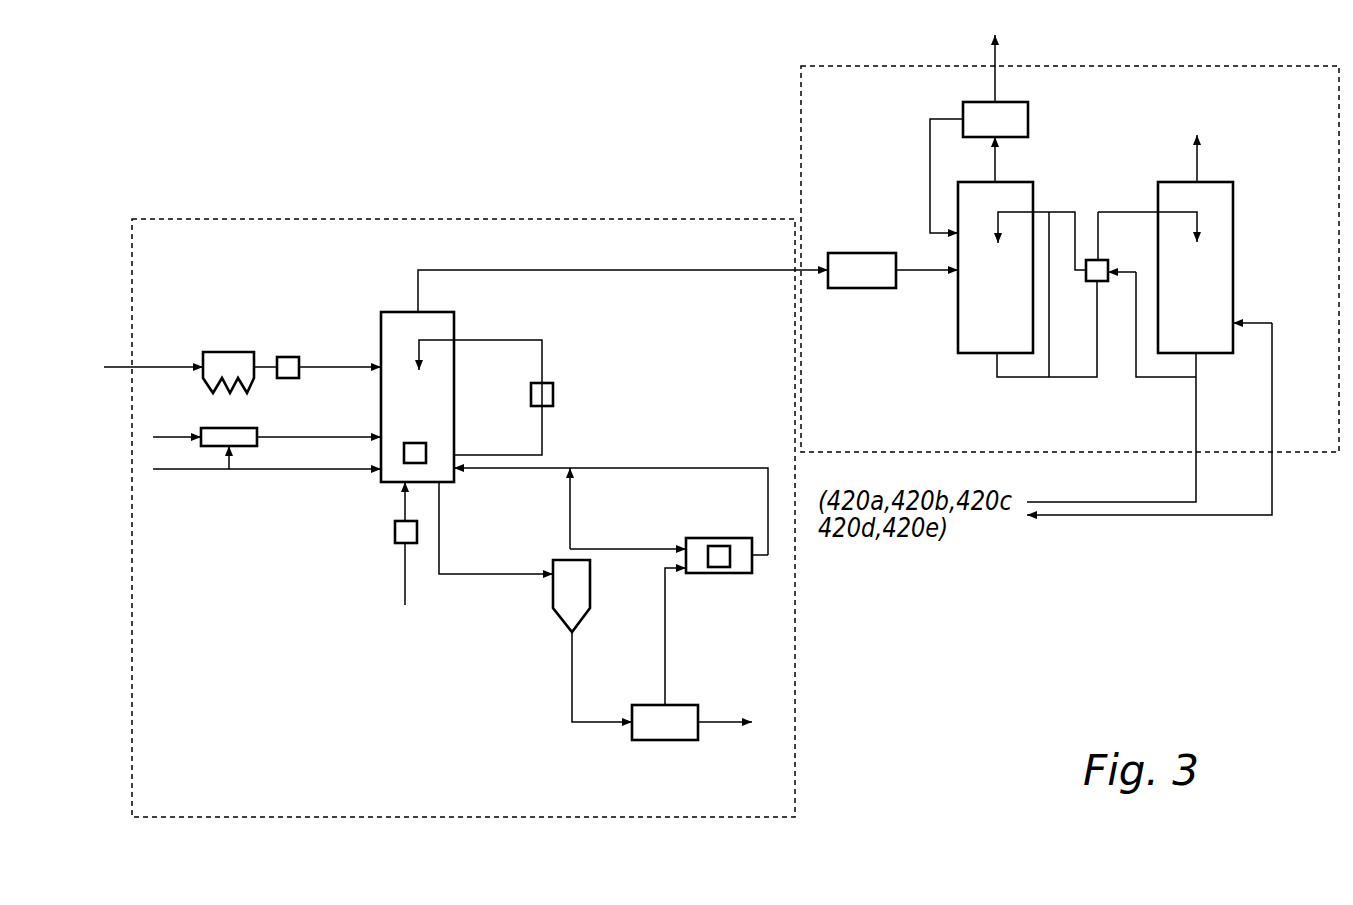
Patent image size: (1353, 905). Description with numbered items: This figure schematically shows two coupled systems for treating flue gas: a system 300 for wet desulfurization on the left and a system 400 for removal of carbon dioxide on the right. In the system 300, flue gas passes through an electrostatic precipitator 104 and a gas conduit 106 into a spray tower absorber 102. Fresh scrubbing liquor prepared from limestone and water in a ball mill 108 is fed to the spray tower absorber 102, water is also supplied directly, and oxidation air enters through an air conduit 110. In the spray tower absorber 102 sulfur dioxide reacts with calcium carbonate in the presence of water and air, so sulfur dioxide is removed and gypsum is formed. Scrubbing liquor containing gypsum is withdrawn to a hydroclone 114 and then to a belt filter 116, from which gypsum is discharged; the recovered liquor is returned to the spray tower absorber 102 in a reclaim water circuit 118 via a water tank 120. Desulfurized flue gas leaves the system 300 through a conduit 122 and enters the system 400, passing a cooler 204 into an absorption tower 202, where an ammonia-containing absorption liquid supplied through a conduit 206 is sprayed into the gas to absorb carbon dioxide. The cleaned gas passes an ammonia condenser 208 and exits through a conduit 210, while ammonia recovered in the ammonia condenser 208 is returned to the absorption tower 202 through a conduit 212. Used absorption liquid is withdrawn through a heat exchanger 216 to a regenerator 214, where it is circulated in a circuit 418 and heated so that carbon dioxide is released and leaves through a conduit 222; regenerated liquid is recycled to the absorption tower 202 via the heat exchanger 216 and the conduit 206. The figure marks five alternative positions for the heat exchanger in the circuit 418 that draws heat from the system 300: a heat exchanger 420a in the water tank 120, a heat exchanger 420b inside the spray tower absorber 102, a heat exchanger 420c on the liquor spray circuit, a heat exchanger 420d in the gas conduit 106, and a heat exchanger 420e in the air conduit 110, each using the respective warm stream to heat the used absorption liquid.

The system for desulfurization 300 is at (412, 210).
The system for removal of carbon dioxide 400 is at (797, 140).
The spray tower absorber 102 is at (454, 325).
The electrostatic precipitator 104 is at (232, 352).
The gas conduit 106 is at (350, 365).
The ball mill 108 is at (258, 428).
The air conduit 110 is at (405, 570).
The hydroclone 114 is at (557, 612).
The belt filter 116 is at (662, 740).
The reclaim water circuit 118 is at (637, 468).
The water tank 120 is at (722, 538).
The conduit 122 is at (645, 270).
The absorption tower 202 is at (959, 320).
The cooler 204 is at (863, 253).
The conduit 206 is at (1048, 212).
The ammonia condenser 208 is at (1028, 120).
The conduit 210 is at (998, 73).
The conduit 212 is at (930, 153).
The regenerator 214 is at (1233, 180).
The heat exchanger 216 is at (1098, 281).
The conduit 222 is at (1197, 160).
The circuit 418 is at (1196, 425).
The heat exchanger 420a is at (718, 567).
The heat exchanger 420b is at (412, 443).
The heat exchanger 420c is at (553, 395).
The heat exchanger 420d is at (292, 357).
The heat exchanger 420e is at (395, 532).